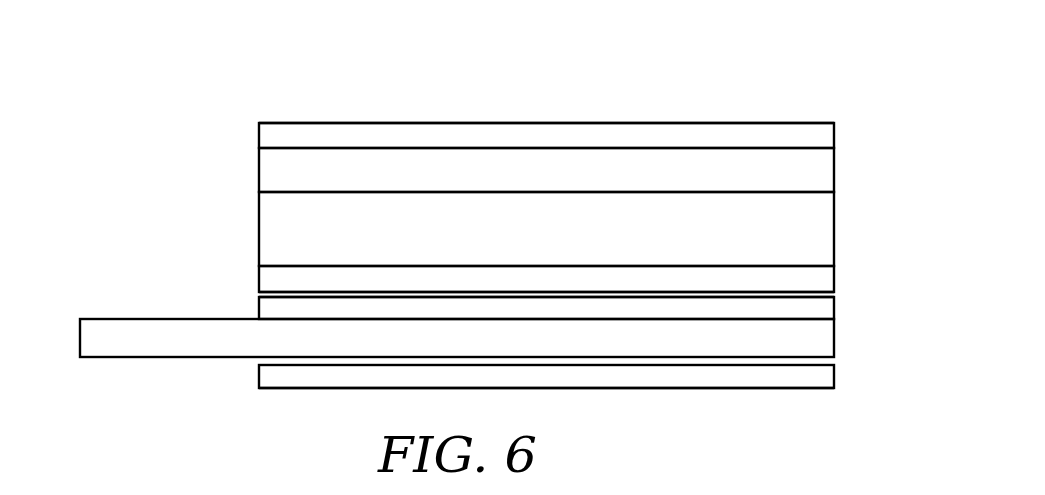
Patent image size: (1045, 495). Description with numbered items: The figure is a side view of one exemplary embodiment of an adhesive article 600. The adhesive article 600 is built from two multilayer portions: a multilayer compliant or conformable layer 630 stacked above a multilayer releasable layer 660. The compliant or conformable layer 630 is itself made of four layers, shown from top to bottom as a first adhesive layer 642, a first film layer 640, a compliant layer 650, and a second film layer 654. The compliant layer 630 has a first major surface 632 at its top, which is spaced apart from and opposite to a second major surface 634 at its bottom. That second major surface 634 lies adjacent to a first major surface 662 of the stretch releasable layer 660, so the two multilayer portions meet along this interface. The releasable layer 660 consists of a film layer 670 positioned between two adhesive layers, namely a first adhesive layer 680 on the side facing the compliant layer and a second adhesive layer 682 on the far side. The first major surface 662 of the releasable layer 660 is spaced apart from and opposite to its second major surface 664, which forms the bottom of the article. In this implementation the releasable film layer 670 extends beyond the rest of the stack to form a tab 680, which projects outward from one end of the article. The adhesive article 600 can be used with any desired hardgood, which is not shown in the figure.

The adhesive article 600 is at (802, 46).
The multilayer compliant or conformable layer 630 is at (848, 123).
The first major surface 632 is at (721, 123).
The second major surface 634 is at (795, 290).
The first adhesive layer 642 is at (272, 135).
The first film layer 640 is at (272, 172).
The compliant layer 650 is at (272, 218).
The second film layer 654 is at (272, 274).
The multilayer releasable layer 660 is at (848, 297).
The first major surface 662 is at (732, 297).
The second major surface 664 is at (802, 390).
The film layer 670 is at (88, 340).
The first adhesive layer 680 is at (272, 308).
The second adhesive layer 682 is at (272, 379).